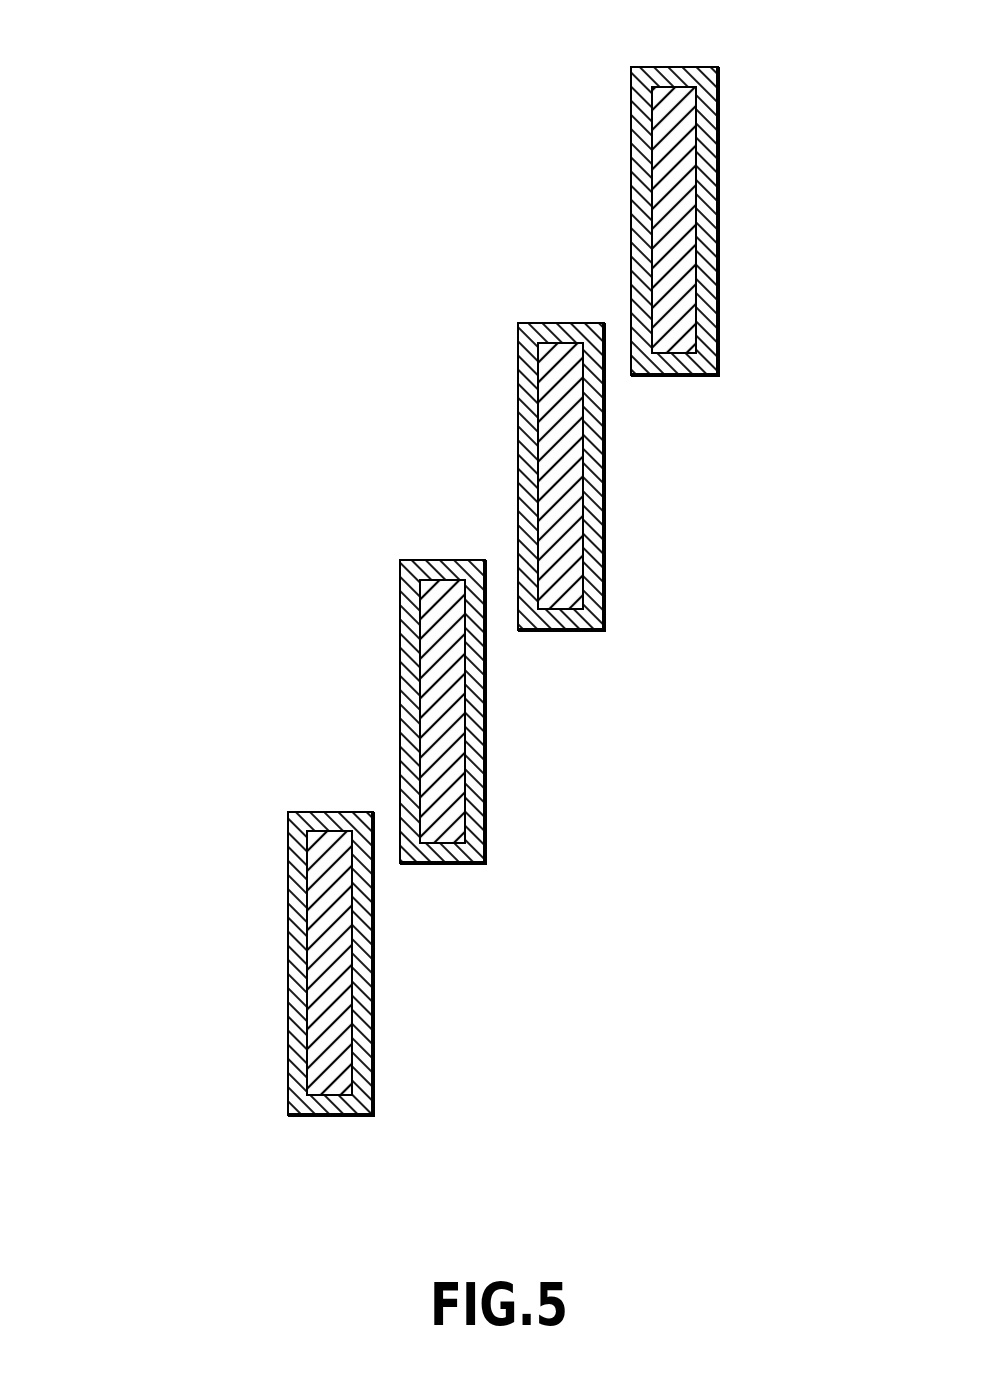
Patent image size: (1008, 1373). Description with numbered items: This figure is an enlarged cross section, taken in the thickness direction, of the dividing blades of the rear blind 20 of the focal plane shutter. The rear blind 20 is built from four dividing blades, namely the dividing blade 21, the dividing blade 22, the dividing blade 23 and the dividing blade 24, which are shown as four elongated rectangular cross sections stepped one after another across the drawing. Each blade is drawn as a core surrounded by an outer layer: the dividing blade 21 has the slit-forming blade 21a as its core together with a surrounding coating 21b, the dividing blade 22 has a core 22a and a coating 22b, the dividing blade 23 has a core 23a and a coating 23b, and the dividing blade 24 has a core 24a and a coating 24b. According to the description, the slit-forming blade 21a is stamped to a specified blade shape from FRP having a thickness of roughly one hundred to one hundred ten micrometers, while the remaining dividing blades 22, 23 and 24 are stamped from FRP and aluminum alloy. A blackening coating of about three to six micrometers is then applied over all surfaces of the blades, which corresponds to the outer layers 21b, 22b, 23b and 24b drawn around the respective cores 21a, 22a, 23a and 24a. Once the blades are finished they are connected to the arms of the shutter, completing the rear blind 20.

The rear blind 20 is at (467, 557).
The dividing blade 21 is at (659, 187).
The slit-forming blade 21a is at (667, 185).
The coating layer of first piece 21b is at (633, 73).
The dividing blade 22 is at (573, 448).
The core of second piece 22a is at (548, 445).
The coating layer of second piece 22b is at (520, 332).
The dividing blade 23 is at (444, 683).
The core of third piece 23a is at (432, 675).
The coating layer of third piece 23b is at (405, 568).
The dividing blade 24 is at (335, 938).
The core of fourth piece 24a is at (318, 932).
The coating layer of fourth piece 24b is at (292, 822).